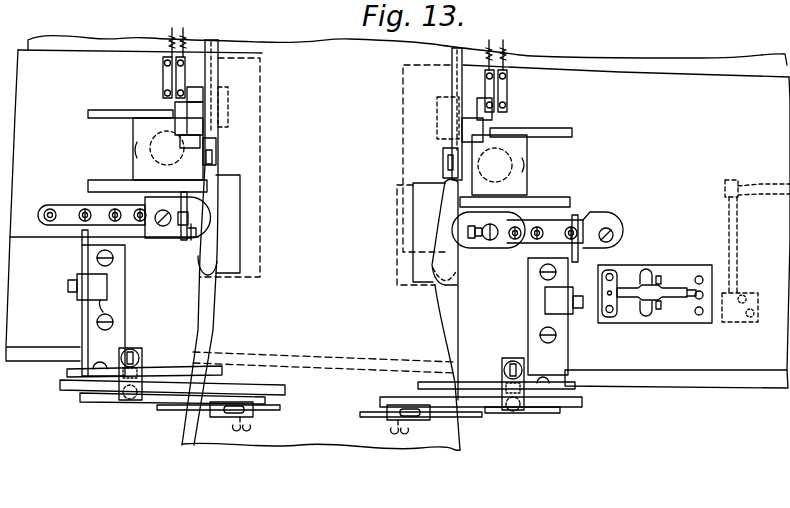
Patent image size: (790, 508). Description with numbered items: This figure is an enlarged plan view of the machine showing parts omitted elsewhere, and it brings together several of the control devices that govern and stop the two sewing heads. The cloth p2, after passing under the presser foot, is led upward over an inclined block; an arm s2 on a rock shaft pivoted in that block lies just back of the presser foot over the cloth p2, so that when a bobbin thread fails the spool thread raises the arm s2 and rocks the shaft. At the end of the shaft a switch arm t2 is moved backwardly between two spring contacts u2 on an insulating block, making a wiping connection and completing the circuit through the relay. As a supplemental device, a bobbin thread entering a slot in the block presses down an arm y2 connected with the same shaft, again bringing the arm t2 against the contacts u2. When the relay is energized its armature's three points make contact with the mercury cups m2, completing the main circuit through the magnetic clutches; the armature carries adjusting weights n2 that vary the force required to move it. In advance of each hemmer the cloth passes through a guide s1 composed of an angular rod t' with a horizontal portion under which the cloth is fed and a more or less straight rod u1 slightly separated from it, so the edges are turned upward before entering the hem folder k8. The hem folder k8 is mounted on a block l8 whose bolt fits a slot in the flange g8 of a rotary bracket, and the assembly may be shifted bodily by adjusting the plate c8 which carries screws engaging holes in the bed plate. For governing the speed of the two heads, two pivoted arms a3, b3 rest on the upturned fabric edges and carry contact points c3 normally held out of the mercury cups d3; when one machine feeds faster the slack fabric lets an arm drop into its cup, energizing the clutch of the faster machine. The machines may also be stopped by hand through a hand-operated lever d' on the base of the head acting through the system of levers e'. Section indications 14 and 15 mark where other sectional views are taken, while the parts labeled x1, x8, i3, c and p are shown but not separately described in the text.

The section line 14- 14 is at (748, 102).
The section line 15- 15 is at (628, 304).
The switch arm t2 is at (175, 114).
The contacts u2 is at (175, 103).
The arm y2 is at (192, 86).
The arm s2 is at (192, 135).
The lever x1 is at (209, 152).
The hem folder k8 is at (240, 212).
The adjustable plate c8 is at (98, 205).
The screw x8 is at (55, 209).
The screws i3 is at (82, 226).
The flange g8 is at (182, 240).
The block l8 is at (193, 240).
The contact points c3 is at (134, 350).
The pivoted arm a3 is at (210, 370).
The pivoted arm b3 is at (423, 382).
The straight rod u1 is at (170, 411).
The guide s1 is at (240, 428).
The angular rod t' is at (313, 421).
The cloth p2 is at (330, 448).
The hand-operated lever d' is at (583, 240).
The system of levers e' is at (565, 317).
The frame c is at (484, 348).
The mercury cups d3 is at (512, 358).
The mercury cups m2 is at (620, 285).
The slide p is at (633, 294).
The adjusting weights n2 is at (690, 305).